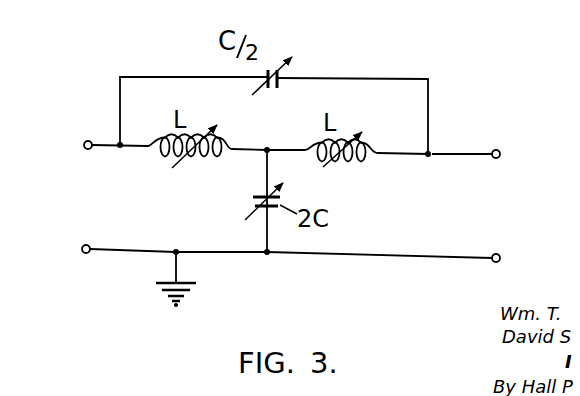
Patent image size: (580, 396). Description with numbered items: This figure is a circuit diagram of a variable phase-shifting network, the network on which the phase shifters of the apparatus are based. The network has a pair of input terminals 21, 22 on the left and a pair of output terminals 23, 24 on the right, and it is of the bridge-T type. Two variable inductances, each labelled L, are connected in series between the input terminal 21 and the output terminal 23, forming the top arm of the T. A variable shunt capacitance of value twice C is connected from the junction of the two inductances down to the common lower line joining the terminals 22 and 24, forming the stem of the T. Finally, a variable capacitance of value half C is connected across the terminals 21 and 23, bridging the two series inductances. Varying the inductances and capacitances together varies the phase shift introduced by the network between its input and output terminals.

The input terminal 21 is at (83, 144).
The input terminal 22 is at (82, 249).
The output terminal 23 is at (500, 152).
The output terminal 24 is at (500, 257).